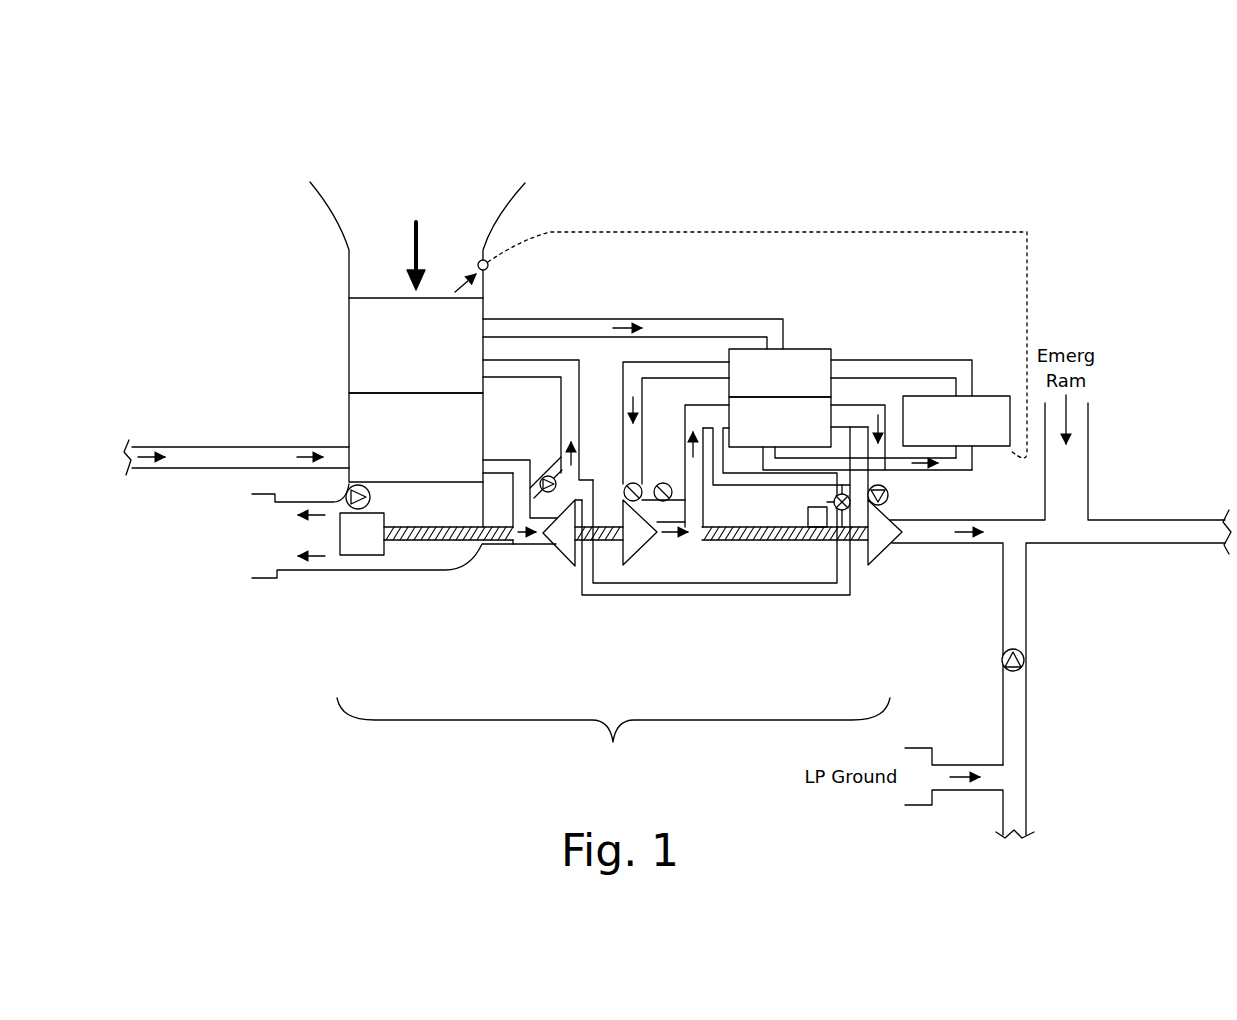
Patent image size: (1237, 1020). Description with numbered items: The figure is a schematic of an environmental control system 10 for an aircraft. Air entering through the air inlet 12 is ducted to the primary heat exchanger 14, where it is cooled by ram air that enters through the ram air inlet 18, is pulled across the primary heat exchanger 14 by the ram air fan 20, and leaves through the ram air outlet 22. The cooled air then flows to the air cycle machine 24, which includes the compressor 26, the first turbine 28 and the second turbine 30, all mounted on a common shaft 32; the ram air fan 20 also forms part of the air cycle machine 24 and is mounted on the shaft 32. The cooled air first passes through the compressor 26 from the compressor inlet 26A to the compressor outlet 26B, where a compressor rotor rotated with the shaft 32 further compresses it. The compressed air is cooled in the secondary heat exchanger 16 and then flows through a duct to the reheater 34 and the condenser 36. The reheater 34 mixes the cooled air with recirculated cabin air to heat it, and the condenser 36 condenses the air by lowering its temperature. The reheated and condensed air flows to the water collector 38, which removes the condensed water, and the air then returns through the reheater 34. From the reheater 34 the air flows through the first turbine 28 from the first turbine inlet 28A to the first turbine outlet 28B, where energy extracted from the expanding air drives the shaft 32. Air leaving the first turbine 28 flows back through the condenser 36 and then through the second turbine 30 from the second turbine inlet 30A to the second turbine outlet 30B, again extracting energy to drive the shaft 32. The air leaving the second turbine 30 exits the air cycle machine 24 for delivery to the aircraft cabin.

The environmental control system 10 is at (188, 103).
The air inlet 12 is at (183, 447).
The primary heat exchanger 14 is at (363, 422).
The secondary heat exchanger 16 is at (366, 341).
The ram air inlet 18 is at (372, 252).
The ram air fan 20 is at (362, 556).
The ram air outlet 22 is at (270, 563).
The air cycle machine 24 is at (613, 740).
The compressor 26 is at (571, 558).
The compressor inlet 26A is at (537, 541).
The compressor outlet 26B is at (568, 497).
The first turbine 28 is at (633, 548).
The first turbine inlet 28A is at (646, 508).
The first turbine outlet 28B is at (658, 540).
The second turbine 30 is at (872, 560).
The second turbine inlet 30A is at (886, 507).
The second turbine outlet 30B is at (906, 534).
The shaft 32 is at (428, 541).
The reheater 34 is at (803, 352).
The condenser 36 is at (820, 433).
The water collector 38 is at (992, 405).